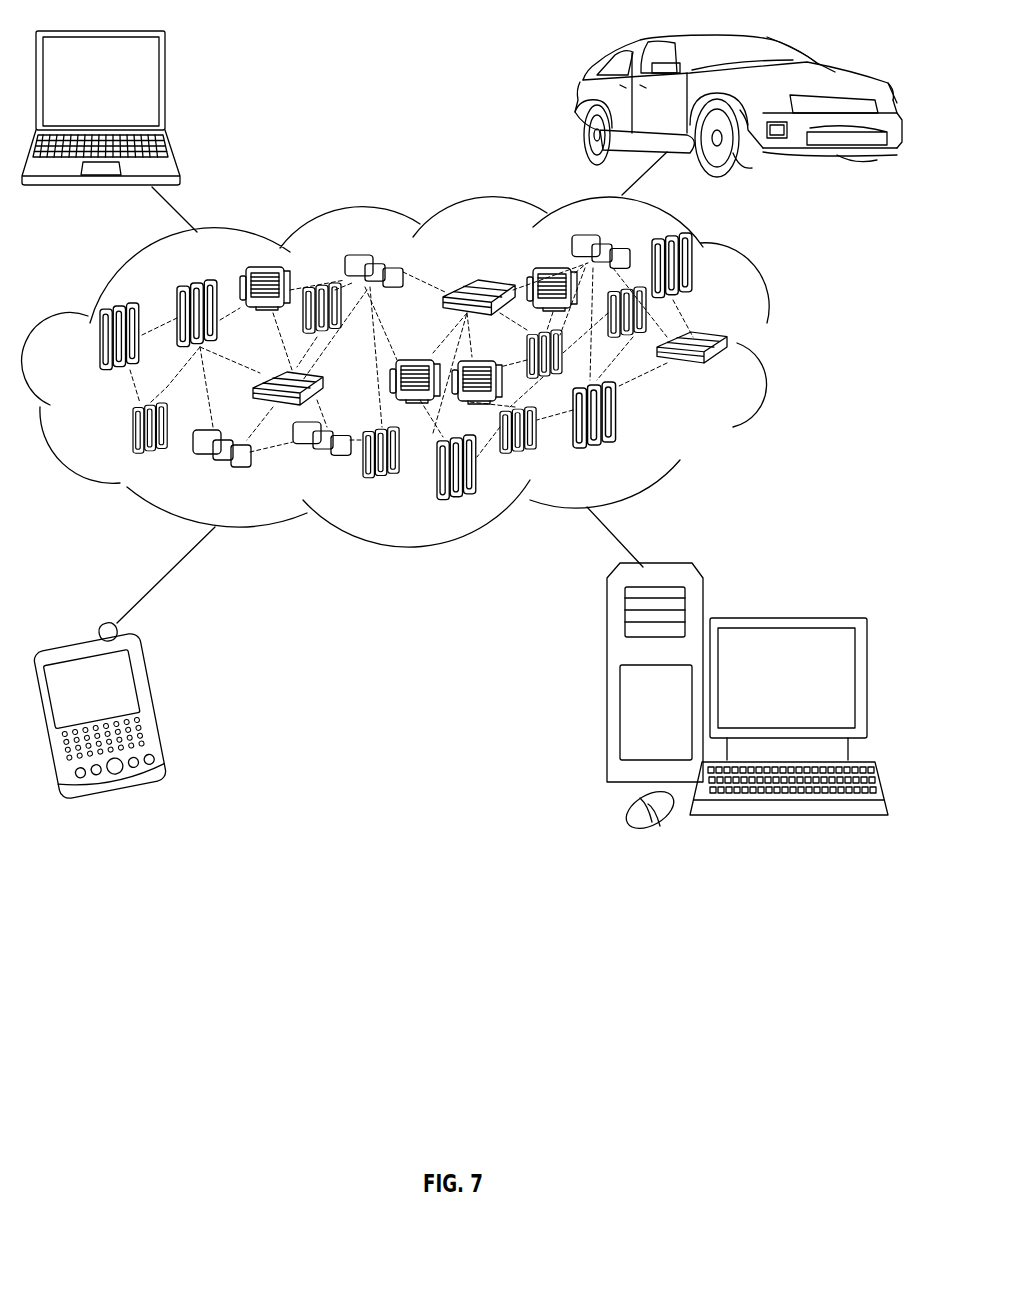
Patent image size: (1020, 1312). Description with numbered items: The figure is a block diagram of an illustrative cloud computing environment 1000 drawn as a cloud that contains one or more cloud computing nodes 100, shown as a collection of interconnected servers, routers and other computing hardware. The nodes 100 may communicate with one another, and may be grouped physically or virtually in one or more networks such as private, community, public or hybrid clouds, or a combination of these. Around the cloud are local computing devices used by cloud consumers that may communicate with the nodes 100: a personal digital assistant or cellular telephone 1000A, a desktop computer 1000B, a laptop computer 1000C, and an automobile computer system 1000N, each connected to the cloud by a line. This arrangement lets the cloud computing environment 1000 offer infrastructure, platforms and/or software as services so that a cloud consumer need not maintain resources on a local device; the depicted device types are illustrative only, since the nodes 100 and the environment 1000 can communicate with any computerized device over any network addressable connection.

The cloud computing nodes 100 is at (729, 373).
The cloud computing environment 1000 is at (785, 350).
The personal digital assistant (PDA) or cellular telephone 1000A is at (157, 707).
The desktop computer 1000B is at (785, 618).
The laptop computer 1000C is at (167, 91).
The automobile computer system 1000N is at (578, 103).